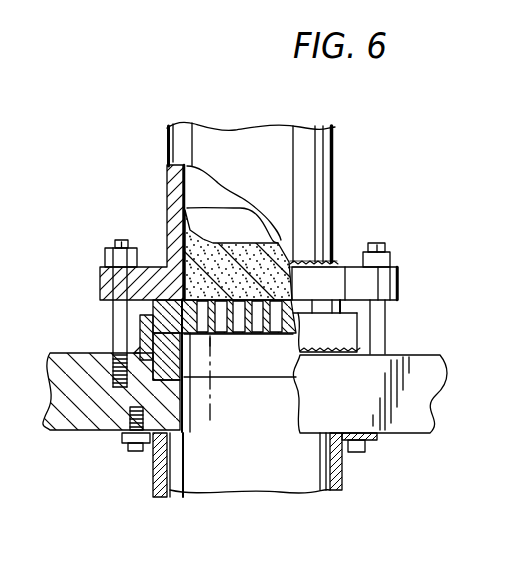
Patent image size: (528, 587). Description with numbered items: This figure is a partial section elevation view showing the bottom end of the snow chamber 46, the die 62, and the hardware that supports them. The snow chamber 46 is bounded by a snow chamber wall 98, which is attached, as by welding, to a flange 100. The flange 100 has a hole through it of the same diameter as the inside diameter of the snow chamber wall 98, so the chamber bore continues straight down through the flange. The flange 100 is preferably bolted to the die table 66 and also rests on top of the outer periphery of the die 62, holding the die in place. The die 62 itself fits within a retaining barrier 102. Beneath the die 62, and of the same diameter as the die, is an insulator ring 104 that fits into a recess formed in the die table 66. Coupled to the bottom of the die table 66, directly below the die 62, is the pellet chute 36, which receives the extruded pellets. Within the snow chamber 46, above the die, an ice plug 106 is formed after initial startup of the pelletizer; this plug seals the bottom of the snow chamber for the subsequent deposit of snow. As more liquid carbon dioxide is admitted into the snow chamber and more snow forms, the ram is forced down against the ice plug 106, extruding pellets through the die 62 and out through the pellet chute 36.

The pellet chute 36 is at (342, 478).
The snow chamber 46 is at (320, 162).
The die 62 is at (293, 321).
The die table 66 is at (426, 398).
The snow chamber wall 98 is at (166, 183).
The flange 100 is at (382, 298).
The retaining barrier 102 is at (140, 331).
The insulator ring 104 is at (150, 378).
The ice plug 106 is at (268, 260).